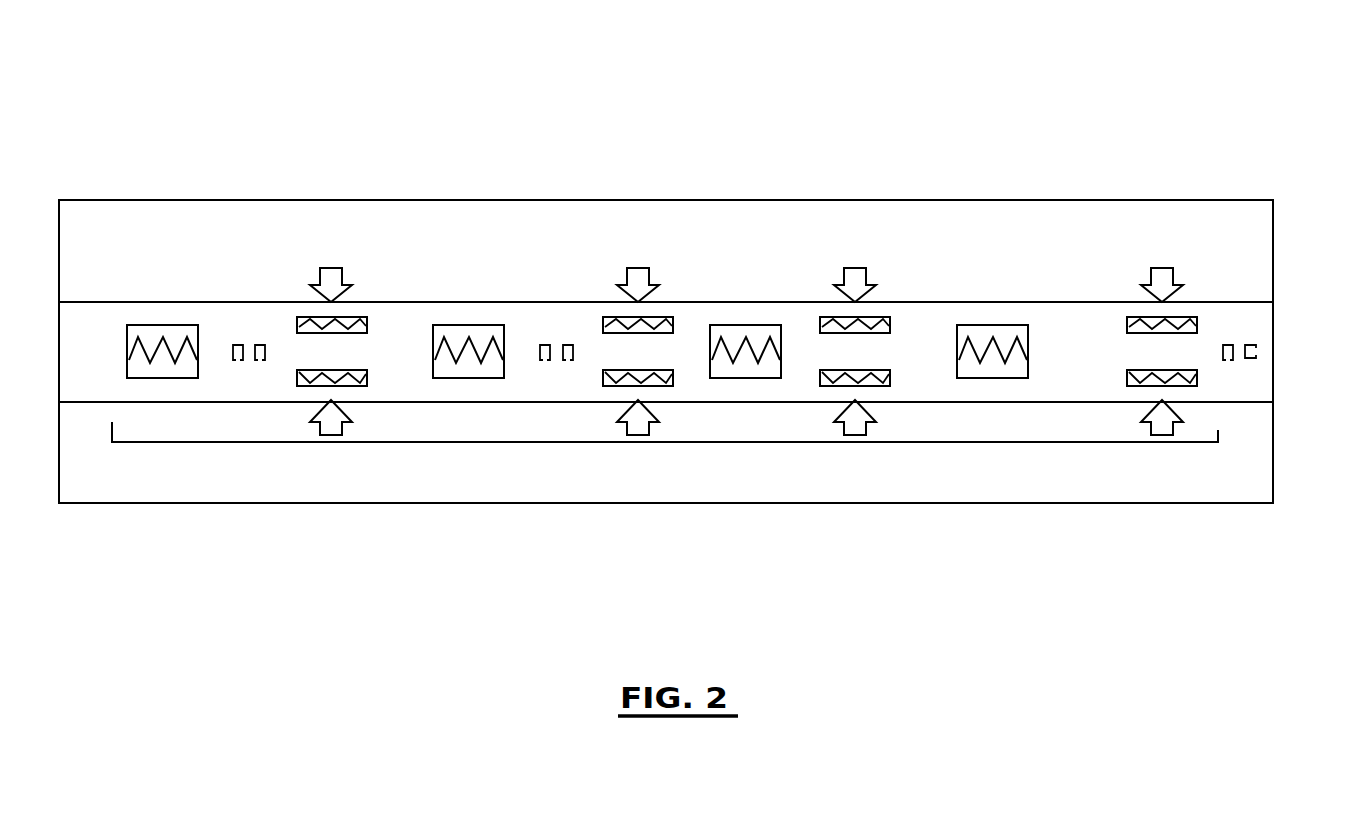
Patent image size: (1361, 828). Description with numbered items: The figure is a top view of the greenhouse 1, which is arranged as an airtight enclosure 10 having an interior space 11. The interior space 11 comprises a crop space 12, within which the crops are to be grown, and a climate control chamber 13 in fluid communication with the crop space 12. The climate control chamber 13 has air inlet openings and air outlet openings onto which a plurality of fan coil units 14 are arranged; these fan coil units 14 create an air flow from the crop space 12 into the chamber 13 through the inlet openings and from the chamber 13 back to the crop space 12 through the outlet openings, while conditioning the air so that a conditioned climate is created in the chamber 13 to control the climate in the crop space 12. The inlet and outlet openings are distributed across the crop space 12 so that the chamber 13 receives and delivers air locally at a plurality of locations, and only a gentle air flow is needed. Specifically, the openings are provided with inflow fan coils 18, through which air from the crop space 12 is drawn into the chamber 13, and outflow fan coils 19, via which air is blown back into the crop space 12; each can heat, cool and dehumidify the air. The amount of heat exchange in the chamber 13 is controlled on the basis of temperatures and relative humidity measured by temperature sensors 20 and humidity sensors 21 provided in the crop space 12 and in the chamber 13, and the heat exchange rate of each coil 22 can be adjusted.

The greenhouse 1 is at (657, 85).
The airtight enclosure 10 is at (461, 172).
The interior space 11 is at (1265, 268).
The crop space 12 is at (332, 215).
The climate control chamber 13 is at (76, 280).
The fan coil units 14 is at (898, 445).
The inflow fan coils 18 is at (302, 292).
The outflow fan coils 19 is at (147, 300).
The temperature sensors 20 is at (236, 361).
The humidity sensors 21 is at (260, 361).
The coil 22 is at (190, 345).